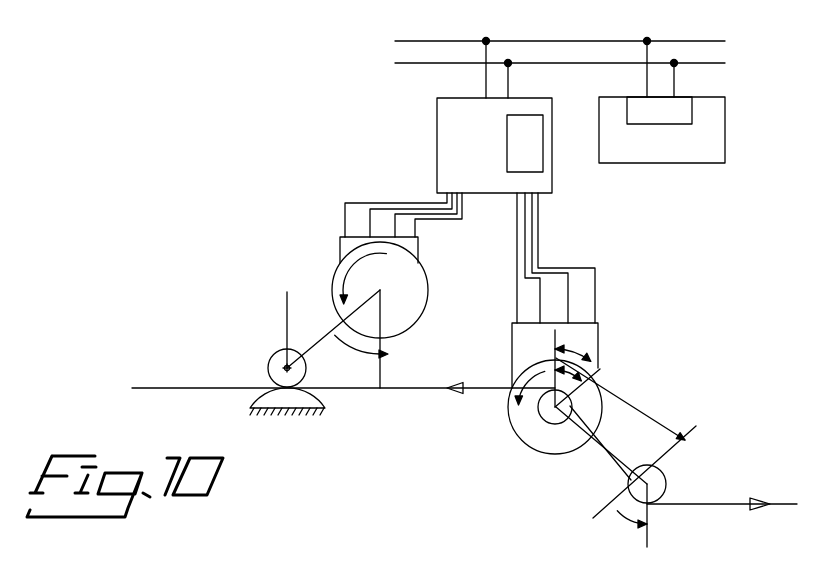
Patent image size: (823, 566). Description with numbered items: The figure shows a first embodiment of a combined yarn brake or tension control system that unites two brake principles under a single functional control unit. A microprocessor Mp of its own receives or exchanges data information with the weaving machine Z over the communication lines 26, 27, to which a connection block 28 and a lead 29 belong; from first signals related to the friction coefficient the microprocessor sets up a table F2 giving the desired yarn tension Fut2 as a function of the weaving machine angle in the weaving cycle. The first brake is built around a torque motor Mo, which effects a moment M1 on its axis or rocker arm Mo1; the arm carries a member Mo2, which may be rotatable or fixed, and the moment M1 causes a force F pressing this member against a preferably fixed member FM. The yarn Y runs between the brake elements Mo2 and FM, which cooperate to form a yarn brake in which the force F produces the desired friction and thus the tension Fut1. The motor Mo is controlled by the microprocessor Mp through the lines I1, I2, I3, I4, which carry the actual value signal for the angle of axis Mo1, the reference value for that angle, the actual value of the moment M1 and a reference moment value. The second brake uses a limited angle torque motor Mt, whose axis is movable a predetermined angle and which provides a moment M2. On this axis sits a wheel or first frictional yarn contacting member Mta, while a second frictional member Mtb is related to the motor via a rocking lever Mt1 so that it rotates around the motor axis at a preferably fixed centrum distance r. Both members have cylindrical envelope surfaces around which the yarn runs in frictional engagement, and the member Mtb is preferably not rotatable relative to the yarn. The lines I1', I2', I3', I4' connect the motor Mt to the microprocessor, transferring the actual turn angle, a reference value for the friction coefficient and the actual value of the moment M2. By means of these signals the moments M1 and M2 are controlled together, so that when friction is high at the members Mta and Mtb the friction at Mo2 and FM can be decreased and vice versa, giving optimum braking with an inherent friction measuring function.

The communication line 26 is at (581, 32).
The communication line 27 is at (581, 66).
The connection block 28 is at (659, 85).
The connection lead 29 is at (693, 81).
The microprocessor Mp is at (494, 117).
The table F2 is at (525, 143).
The weaving machine Z is at (662, 130).
The line for actual value signal of angle I1 is at (372, 217).
The line for reference value signal of angle I2 is at (392, 202).
The line for actual value signal of moment M1 I3 is at (412, 202).
The line for reference value signal of moment I4 is at (438, 222).
The moment M1 is at (380, 287).
The torque motor Mo is at (399, 337).
The rocker arm Mo1 is at (333, 338).
The brake member Mo2 is at (268, 368).
The force F is at (276, 315).
The fixed member FM is at (287, 420).
The yarn Y is at (343, 371).
The yarn tension Fut1 is at (412, 406).
The line for actual value signal of angle β I1' is at (496, 261).
The line for reference value signal of μ I2' is at (507, 258).
The line for actual value signal of M2 I3' is at (584, 258).
The signal line I4' is at (589, 261).
The moment M2 is at (518, 362).
The limited angle torque motor Mt is at (526, 445).
The rocking lever Mt1 is at (574, 426).
The first frictional yarn contacting member Mta is at (510, 420).
The centrum distance r is at (620, 399).
The second frictional yarn contacting member Mtb is at (626, 477).
The desired yarn tension Fut2 is at (722, 524).